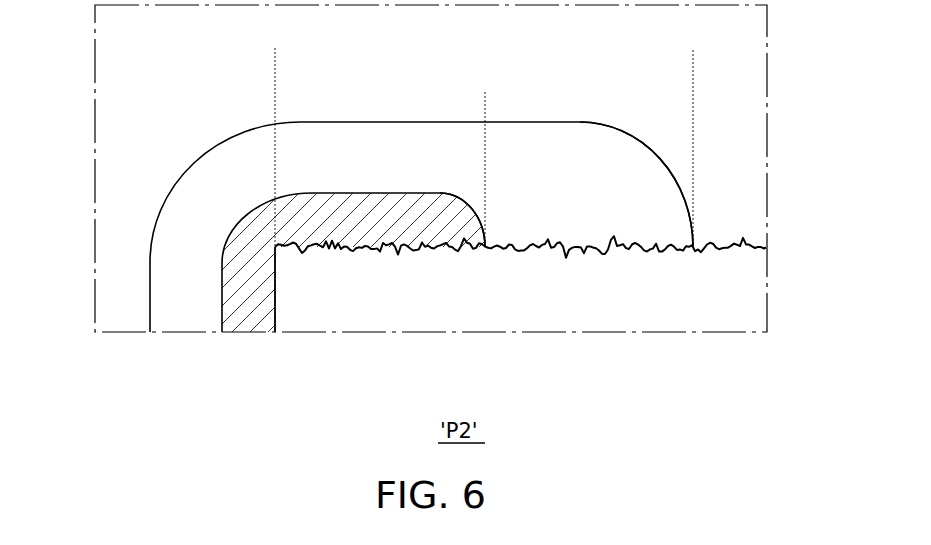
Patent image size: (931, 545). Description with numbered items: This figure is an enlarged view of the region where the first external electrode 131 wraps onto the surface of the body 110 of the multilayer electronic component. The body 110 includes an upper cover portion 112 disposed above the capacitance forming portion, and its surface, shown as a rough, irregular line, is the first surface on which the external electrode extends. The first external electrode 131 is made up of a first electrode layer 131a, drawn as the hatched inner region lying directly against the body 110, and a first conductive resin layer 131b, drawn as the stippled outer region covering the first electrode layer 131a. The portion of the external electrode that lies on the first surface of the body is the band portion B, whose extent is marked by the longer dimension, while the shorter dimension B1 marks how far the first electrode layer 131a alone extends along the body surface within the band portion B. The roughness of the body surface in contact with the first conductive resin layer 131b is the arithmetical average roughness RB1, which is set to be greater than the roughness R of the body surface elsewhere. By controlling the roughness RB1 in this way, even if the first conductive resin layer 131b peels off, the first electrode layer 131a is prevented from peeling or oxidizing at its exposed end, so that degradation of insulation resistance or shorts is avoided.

The body 110 is at (732, 245).
The upper cover portion 112 is at (762, 276).
The first external electrode 131 is at (390, 277).
The first electrode layer 131a is at (142, 388).
The first conductive resin layer 131b is at (173, 313).
The arithmetical average roughness R is at (693, 247).
The arithmetical average roughness of surfaces in contact with conductive resin laye RB1 is at (367, 252).
The band portion B is at (692, 58).
The band portion of the electrode layer B1 is at (484, 99).